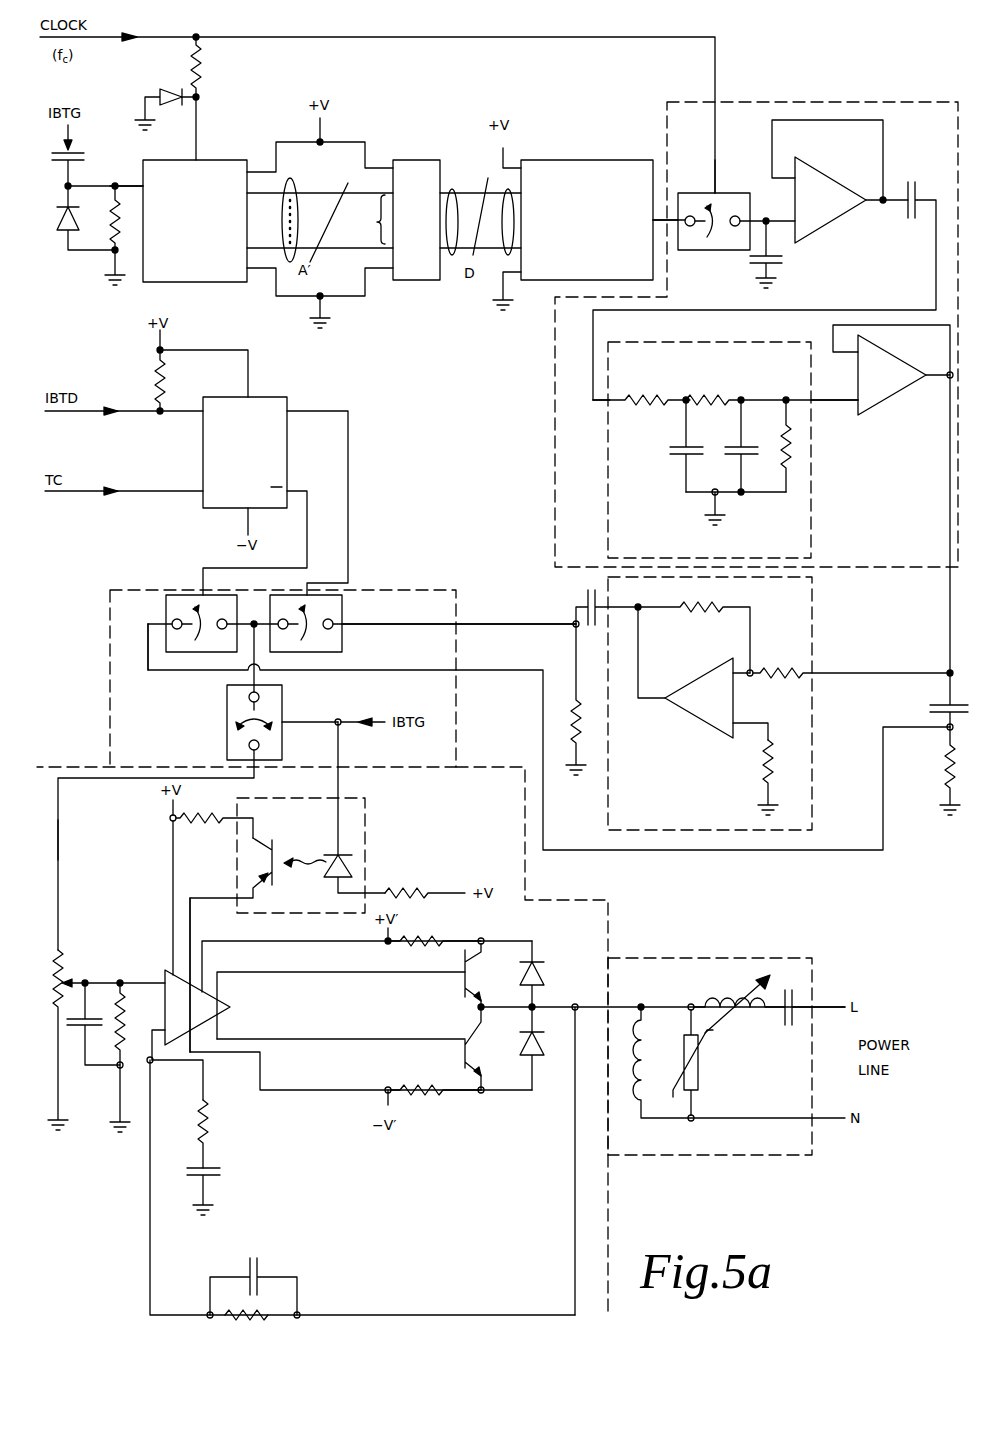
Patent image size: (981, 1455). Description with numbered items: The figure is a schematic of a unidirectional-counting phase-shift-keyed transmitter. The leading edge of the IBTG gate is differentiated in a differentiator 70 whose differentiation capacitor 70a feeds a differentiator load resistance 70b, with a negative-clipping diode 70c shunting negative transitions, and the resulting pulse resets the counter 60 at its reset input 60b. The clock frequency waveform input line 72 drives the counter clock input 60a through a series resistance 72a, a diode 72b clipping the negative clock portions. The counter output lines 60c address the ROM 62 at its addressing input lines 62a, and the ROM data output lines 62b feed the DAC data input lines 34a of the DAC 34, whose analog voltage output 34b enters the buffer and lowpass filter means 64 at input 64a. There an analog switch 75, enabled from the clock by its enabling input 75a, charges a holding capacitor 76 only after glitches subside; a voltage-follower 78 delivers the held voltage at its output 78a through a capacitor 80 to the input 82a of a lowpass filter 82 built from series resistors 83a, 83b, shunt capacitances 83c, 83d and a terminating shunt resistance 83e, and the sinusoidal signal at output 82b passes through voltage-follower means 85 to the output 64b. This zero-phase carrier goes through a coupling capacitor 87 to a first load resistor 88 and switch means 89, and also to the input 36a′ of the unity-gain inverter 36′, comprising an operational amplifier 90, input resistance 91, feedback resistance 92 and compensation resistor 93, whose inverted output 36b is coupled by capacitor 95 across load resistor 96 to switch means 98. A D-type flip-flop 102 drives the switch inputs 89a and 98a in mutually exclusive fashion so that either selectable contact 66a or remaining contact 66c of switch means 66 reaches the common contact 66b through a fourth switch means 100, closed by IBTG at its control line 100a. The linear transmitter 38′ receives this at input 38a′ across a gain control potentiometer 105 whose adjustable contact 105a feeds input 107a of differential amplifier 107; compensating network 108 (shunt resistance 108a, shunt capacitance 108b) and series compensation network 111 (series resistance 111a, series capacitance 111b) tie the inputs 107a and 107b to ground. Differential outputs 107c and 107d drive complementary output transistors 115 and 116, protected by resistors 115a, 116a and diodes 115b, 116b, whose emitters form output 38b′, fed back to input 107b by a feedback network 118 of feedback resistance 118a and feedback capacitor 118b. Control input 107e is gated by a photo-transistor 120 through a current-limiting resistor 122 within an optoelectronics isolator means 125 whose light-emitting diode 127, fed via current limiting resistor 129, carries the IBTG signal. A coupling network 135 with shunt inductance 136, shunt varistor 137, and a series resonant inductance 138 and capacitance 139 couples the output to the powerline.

The DAC 34 is at (570, 158).
The DAC data input lines 34a is at (506, 252).
The DAC analog voltage output 34b is at (665, 218).
The unity-gain analog voltage inverter 36′ is at (608, 822).
The inverter input 36a′ is at (890, 672).
The inverter output 36b is at (640, 604).
The linear transmitter 38′ is at (486, 768).
The linear transmitter input 38a′ is at (60, 840).
The linear transmitter output 38b′ is at (578, 1003).
The counter 60 is at (203, 283).
The counter clock input 60a is at (197, 150).
The counter reset input 60b is at (134, 183).
The counter output lines 60c is at (294, 180).
The ROM 62 is at (410, 158).
The ROM addressing input lines 62a is at (362, 219).
The ROM data output lines 62b is at (452, 185).
The buffer and lowpass filter means 64 is at (932, 100).
The lowpass filter-buffer means input 64a is at (673, 245).
The lowpass filter-buffer means output 64b is at (945, 575).
The switch means 66 is at (446, 590).
The selectable contact 66a is at (147, 655).
The common contact 66b is at (86, 778).
The remaining selectable contact 66c is at (426, 623).
The differentiator 70 is at (90, 229).
The differentiation capacitor 70a is at (73, 152).
The differentiator load resistance 70b is at (122, 255).
The negative-clipping diode 70c is at (64, 240).
The clock frequency waveform input line 72 is at (158, 36).
The series resistance 72a is at (203, 66).
The diode 72b is at (157, 88).
The analog switch 75 is at (690, 190).
The switch enabling input 75a is at (718, 190).
The holding capacitor 76 is at (785, 258).
The operational amplifier voltage-follower 78 is at (845, 178).
The buffer amplifier output 78a is at (885, 196).
The capacitor 80 is at (915, 220).
The resistance-capacitance lowpass filter 82 is at (642, 342).
The lowpass filter input 82a is at (600, 404).
The lowpass filter output 82b is at (812, 403).
The series resistor 83a is at (648, 397).
The series resistor 83b is at (716, 397).
The shunt capacitance 83c is at (672, 451).
The shunt capacitance 83d is at (738, 458).
The terminating shunt resistance 83e is at (786, 476).
The operational amplifier voltage-follower means 85 is at (882, 398).
The coupling capacitor 87 is at (932, 707).
The first load resistor 88 is at (942, 762).
The switch means 89 is at (164, 612).
The switch means input 89a is at (202, 568).
The operational amplifier 90 is at (700, 718).
The input resistance 91 is at (778, 668).
The feedback resistance 92 is at (694, 612).
The compensation resistor 93 is at (760, 766).
The coupling capacitor 95 is at (583, 602).
The load resistor 96 is at (572, 762).
The switch means 98 is at (346, 632).
The switch means input 98a is at (352, 564).
The fourth switch means 100 is at (226, 708).
The switch control line 100a is at (338, 718).
The D-type flip-flop logic element 102 is at (256, 396).
The gain control potentiometer 105 is at (60, 958).
The adjustable contact 105a is at (92, 978).
The differential amplifier 107 is at (232, 1005).
The differential amplifier input 107a is at (122, 983).
The remaining differential input 107b is at (138, 980).
The differential output 107c is at (286, 968).
The differential output 107d is at (334, 1038).
The control input 107e is at (192, 925).
The compensating network 108 is at (91, 1095).
The shunt resistance 108a is at (130, 1040).
The shunt capacitance 108b is at (82, 1035).
The series compensation network 111 is at (212, 1142).
The series resistance 111a is at (210, 1116).
The series capacitance 111b is at (216, 1182).
The output transistor 115 is at (462, 985).
The protection resistor 115a is at (422, 938).
The protection diode 115b is at (540, 960).
The output transistor 116 is at (462, 1050).
The protection resistor 116a is at (424, 1096).
The protection diode 116b is at (541, 1058).
The compensated feedback network 118 is at (362, 1203).
The feedback resistance 118a is at (250, 1320).
The feedback capacitor 118b is at (301, 1294).
The photo-transistor 120 is at (276, 848).
The current-limiting resistor 122 is at (222, 822).
The optoelectronics isolator means 125 is at (366, 810).
The light-emitting diode 127 is at (326, 872).
The current limiting resistor 129 is at (420, 888).
The coupling network 135 is at (768, 958).
The shunt inductance 136 is at (636, 1104).
The shunt varistor 137 is at (700, 1060).
The inductance 138 is at (697, 1000).
The capacitance 139 is at (786, 1018).